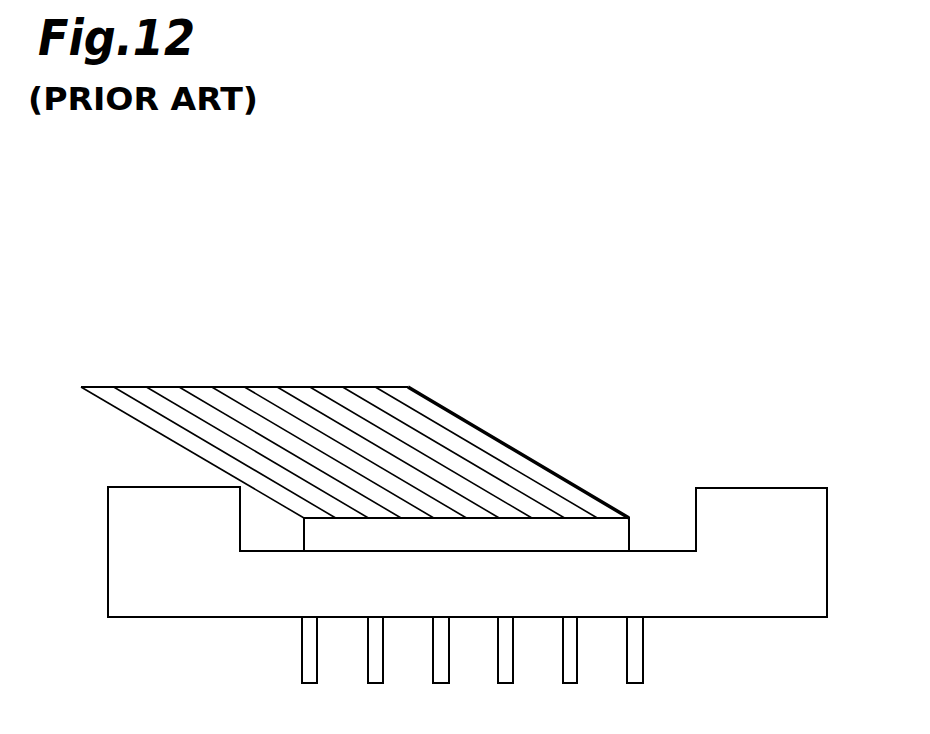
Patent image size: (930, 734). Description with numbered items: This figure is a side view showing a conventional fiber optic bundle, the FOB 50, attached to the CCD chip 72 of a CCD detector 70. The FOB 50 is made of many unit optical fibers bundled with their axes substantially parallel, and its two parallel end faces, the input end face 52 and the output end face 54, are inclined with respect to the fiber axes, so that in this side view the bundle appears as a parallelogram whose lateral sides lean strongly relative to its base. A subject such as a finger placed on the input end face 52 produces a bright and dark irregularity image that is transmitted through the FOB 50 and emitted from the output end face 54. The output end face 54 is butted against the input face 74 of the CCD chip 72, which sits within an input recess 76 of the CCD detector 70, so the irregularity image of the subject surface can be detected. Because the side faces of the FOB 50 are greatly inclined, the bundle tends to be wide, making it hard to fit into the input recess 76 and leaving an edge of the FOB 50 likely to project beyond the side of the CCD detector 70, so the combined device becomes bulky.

The FOB 50 is at (484, 371).
The input end face 52 is at (352, 387).
The output end face 54 is at (317, 520).
The CCD detector 70 is at (821, 472).
The CCD chip 72 is at (630, 534).
The input face 74 is at (578, 516).
The input recess 76 is at (677, 498).